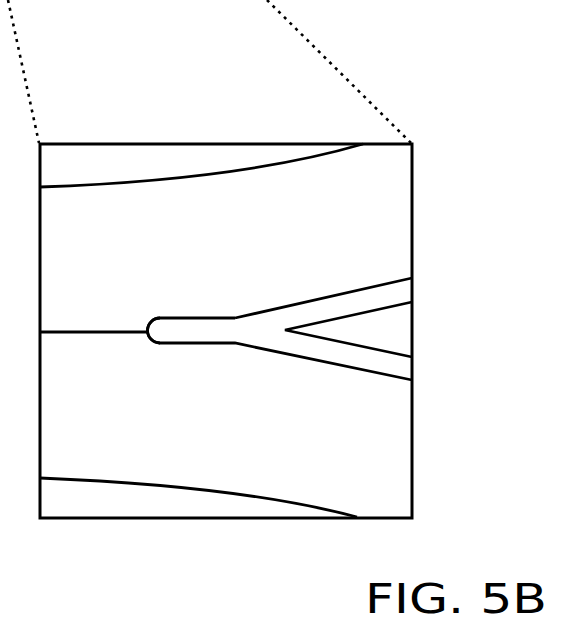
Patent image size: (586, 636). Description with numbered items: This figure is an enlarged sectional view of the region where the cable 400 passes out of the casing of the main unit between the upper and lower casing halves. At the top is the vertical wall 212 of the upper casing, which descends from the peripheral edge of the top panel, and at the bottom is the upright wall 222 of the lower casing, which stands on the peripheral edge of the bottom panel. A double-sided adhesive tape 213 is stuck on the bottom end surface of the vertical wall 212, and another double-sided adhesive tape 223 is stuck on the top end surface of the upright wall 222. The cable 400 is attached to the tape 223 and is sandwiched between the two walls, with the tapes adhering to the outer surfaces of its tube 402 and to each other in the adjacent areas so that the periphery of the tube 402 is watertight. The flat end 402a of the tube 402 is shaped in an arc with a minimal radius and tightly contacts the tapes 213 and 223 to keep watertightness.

The vertical wall 212 is at (113, 157).
The double-sided adhesive tape 213 is at (197, 212).
The upright wall 222 is at (148, 503).
The double-sided adhesive tape 223 is at (232, 450).
The cable 400 is at (372, 275).
The tube 402 is at (308, 312).
The flat end 402a is at (145, 327).